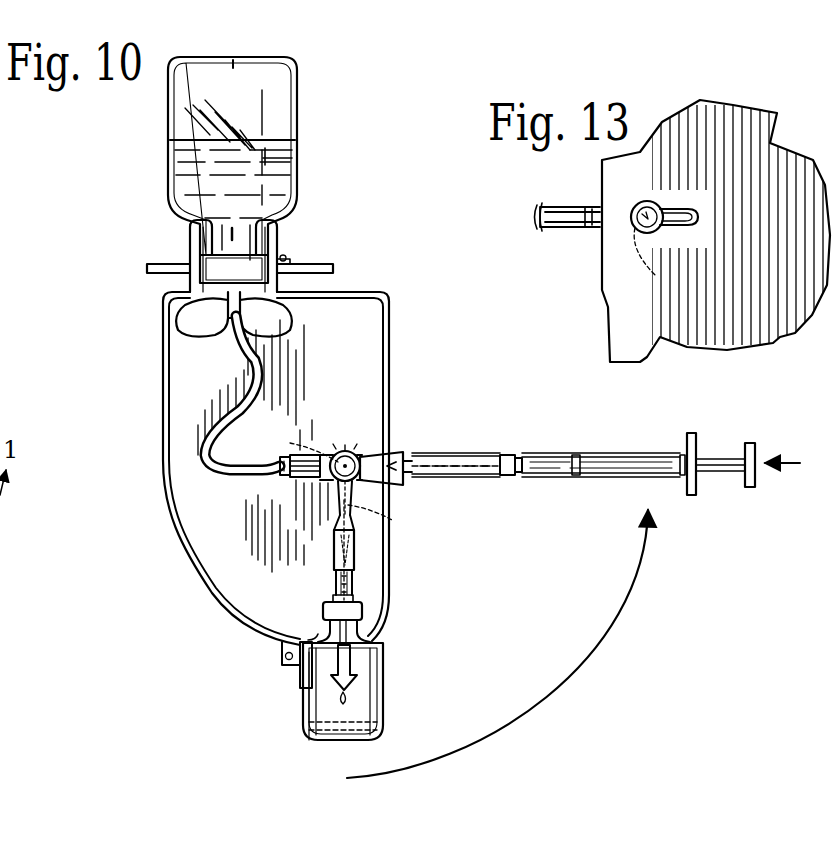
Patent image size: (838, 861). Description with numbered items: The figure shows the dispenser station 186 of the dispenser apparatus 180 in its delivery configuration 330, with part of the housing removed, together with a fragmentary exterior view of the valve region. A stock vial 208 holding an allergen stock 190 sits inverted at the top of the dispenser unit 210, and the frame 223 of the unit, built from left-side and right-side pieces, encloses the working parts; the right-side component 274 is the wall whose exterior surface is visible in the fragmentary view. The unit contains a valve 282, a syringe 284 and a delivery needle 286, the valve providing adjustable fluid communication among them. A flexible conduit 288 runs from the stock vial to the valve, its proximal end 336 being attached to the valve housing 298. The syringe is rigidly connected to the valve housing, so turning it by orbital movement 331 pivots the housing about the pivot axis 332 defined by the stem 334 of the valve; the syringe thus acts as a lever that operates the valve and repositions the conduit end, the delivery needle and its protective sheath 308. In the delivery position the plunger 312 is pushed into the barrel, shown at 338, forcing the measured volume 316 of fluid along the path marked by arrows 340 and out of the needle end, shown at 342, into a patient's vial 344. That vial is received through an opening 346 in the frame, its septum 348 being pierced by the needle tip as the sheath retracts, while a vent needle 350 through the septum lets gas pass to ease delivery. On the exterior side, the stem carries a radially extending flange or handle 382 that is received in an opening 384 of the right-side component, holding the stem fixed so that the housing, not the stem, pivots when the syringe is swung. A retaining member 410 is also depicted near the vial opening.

In FIG. 10, the dispenser apparatus 180 is at (157, 724).
In FIG. 10, the dispenser station 186 is at (153, 650).
In FIG. 10, the allergen stock 190 is at (172, 161).
In FIG. 10, the stock vial 208 is at (170, 116).
In FIG. 10, the dispenser unit 210 is at (215, 650).
In FIG. 10, the frame 223 is at (266, 650).
In FIG. 10, the right-side component 274 is at (212, 596).
In FIG. 13, the right-side component 274 is at (612, 306).
In FIG. 10, the valve 282 is at (360, 446).
In FIG. 13, the valve 282 is at (630, 207).
In FIG. 10, the syringe 284 is at (607, 452).
In FIG. 13, the syringe 284 is at (565, 236).
In FIG. 10, the delivery needle 286 is at (352, 578).
In FIG. 10, the flexible conduit 288 is at (208, 445).
In FIG. 10, the valve housing 298 is at (346, 450).
In FIG. 10, the sheath 308 is at (358, 565).
In FIG. 10, the plunger 312 is at (722, 480).
In FIG. 10, the measured volume 316 is at (455, 470).
In FIG. 10, the delivery configuration 330 is at (583, 459).
In FIG. 10, the orbital movement of the syringe 331 is at (554, 700).
In FIG. 10, the pivot axis 332 is at (302, 438).
In FIG. 13, the pivot axis 332 is at (658, 266).
In FIG. 10, the stem 334 is at (352, 470).
In FIG. 13, the stem 334 is at (640, 206).
In FIG. 10, the proximal end of the flexible conduit 336 is at (276, 478).
In FIG. 10, the pushing of the plunger 338 is at (792, 470).
In FIG. 10, the fluid flow path 340 is at (412, 466).
In FIG. 10, the fluid exit from delivery needle 342 is at (350, 658).
In FIG. 10, the patient's vial 344 is at (384, 706).
In FIG. 10, the opening 346 is at (324, 634).
In FIG. 10, the septum 348 is at (364, 612).
In FIG. 10, the vent needle 350 is at (335, 600).
In FIG. 13, the handle 382 is at (683, 208).
In FIG. 13, the opening 384 is at (694, 221).
In FIG. 10, the retaining clip 410 is at (296, 686).